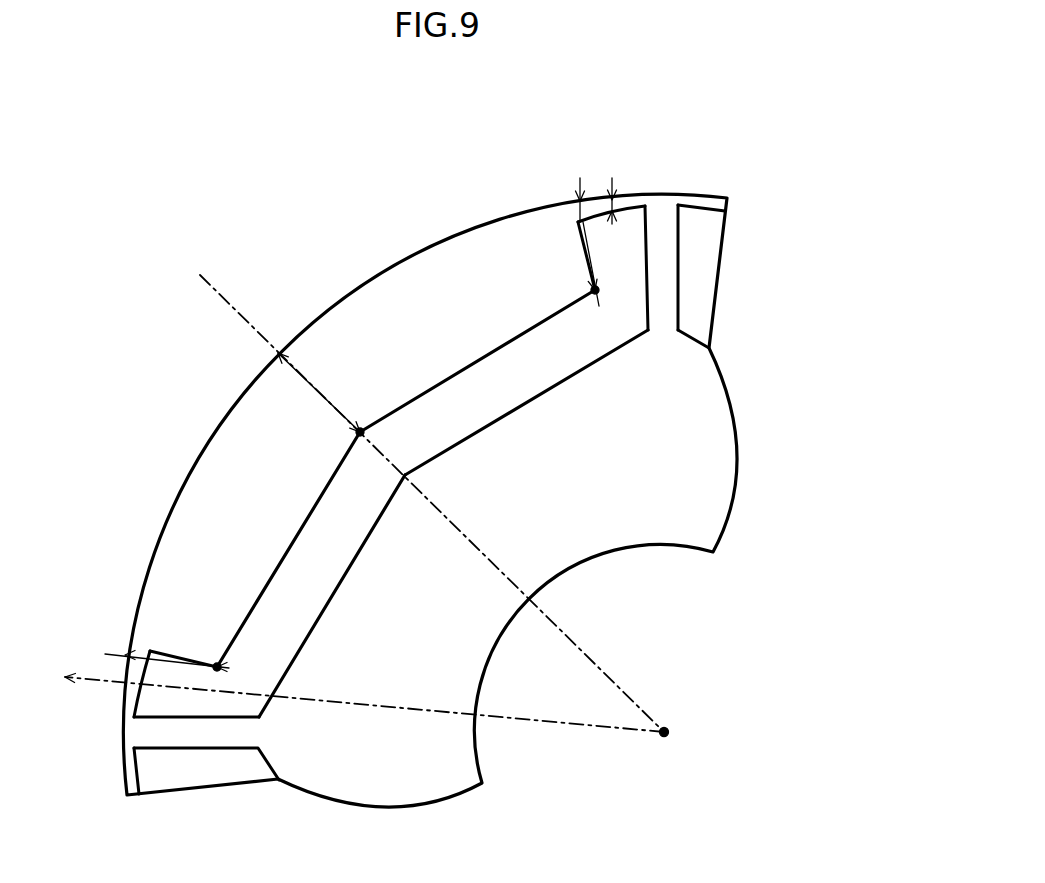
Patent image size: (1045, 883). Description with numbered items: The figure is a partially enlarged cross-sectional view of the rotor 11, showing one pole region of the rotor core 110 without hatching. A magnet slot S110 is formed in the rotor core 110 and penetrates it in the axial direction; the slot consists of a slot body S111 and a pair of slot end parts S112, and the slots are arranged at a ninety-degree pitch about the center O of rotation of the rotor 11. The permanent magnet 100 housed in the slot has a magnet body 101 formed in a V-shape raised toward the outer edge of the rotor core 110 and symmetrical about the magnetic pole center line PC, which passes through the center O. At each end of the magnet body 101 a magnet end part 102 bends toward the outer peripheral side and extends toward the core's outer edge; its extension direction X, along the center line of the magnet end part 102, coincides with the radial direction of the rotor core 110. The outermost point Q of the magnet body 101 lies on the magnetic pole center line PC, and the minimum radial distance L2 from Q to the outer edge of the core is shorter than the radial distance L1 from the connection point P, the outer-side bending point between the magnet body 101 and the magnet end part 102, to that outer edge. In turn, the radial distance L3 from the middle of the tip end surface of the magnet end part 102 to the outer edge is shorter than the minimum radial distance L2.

The rotor 11 is at (693, 98).
The rotor core 110 is at (662, 204).
The magnet end part 102 is at (627, 242).
The slot end part S112 is at (643, 284).
The permanent magnet 100 is at (447, 402).
The magnet body 101 is at (347, 497).
The magnet slot S110 is at (500, 350).
The slot body S111 is at (293, 540).
The magnetic pole center line PC is at (229, 302).
The extension direction X is at (364, 707).
The center of rotation O is at (667, 728).
The outermost point Q is at (361, 430).
The connection point P is at (593, 290).
The radial distance L1 is at (584, 234).
The minimum radial distance L2 is at (318, 378).
The radial distance L3 is at (611, 200).